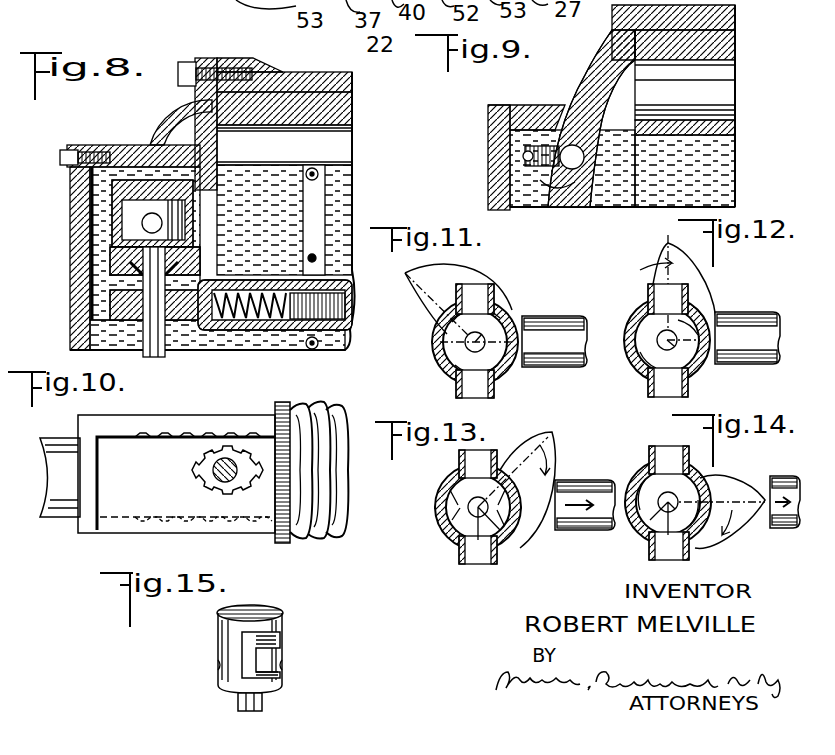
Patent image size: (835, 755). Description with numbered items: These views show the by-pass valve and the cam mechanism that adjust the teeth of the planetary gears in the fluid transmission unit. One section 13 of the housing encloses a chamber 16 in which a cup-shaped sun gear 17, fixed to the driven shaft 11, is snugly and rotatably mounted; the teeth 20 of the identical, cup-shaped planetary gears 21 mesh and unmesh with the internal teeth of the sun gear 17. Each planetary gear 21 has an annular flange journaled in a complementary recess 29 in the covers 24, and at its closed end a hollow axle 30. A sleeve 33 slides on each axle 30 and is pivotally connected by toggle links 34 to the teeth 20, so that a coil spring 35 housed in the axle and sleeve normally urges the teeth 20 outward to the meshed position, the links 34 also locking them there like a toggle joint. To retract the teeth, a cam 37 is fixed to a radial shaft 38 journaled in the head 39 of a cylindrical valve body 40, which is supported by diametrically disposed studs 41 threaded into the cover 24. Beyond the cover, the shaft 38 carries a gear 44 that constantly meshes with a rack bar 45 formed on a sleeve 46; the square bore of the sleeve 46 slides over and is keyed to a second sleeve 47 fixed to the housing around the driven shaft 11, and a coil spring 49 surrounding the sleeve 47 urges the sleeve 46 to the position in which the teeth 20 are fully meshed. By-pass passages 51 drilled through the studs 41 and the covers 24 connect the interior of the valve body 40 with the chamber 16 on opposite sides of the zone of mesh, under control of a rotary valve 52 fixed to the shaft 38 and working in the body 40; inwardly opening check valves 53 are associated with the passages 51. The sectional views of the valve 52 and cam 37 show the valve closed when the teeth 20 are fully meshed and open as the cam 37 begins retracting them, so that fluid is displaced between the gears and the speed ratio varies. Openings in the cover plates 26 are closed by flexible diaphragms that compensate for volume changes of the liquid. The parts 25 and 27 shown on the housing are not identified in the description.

In FIG. 10, the driven shaft 11 is at (62, 520).
In FIG. 8, the housing section 13 is at (353, 83).
In FIG. 8, the chamber 16 is at (273, 100).
In FIG. 8, the sun gear 17 is at (353, 109).
In FIG. 9, the sun gear 17 is at (736, 48).
In FIG. 8, the teeth 20 is at (340, 146).
In FIG. 8, the planetary gears 21 is at (240, 222).
In FIG. 9, the planetary gears 21 is at (736, 129).
In FIG. 8, the covers 24 is at (122, 146).
In FIG. 9, the covers 24 is at (530, 105).
In FIG. 8, the screw 25 is at (176, 65).
In FIG. 8, the cover plates 26 is at (80, 193).
In FIG. 9, the cover plates 26 is at (490, 139).
In FIG. 8, the screw 27 is at (62, 158).
In FIG. 8, the recesses 29 is at (200, 144).
In FIG. 8, the hollow axles 30 is at (349, 319).
In FIG. 8, the sleeve 33 is at (346, 284).
In FIG. 11, the sleeve 33 is at (564, 368).
In FIG. 12, the sleeve 33 is at (759, 365).
In FIG. 13, the sleeve 33 is at (577, 535).
In FIG. 14, the sleeve 33 is at (785, 502).
In FIG. 8, the toggle links 34 is at (318, 196).
In FIG. 8, the coil spring 35 is at (346, 300).
In FIG. 8, the cam 37 is at (120, 306).
In FIG. 9, the cam 37 is at (591, 118).
In FIG. 11, the cam 37 is at (462, 284).
In FIG. 12, the cam 37 is at (692, 277).
In FIG. 13, the cam 37 is at (549, 450).
In FIG. 14, the cam 37 is at (730, 548).
In FIG. 8, the shaft 38 is at (153, 356).
In FIG. 11, the shaft 38 is at (458, 342).
In FIG. 10, the shaft 38 is at (226, 459).
In FIG. 15, the shaft 38 is at (264, 705).
In FIG. 8, the head 39 is at (112, 270).
In FIG. 8, the cylindrical valve body 40 is at (142, 223).
In FIG. 11, the cylindrical valve body 40 is at (447, 373).
In FIG. 12, the cylindrical valve body 40 is at (698, 312).
In FIG. 13, the cylindrical valve body 40 is at (453, 541).
In FIG. 14, the cylindrical valve body 40 is at (703, 481).
In FIG. 9, the studs 41 is at (546, 207).
In FIG. 10, the gear 44 is at (236, 505).
In FIG. 10, the rack bar 45 is at (168, 431).
In FIG. 10, the sleeve 46 is at (119, 524).
In FIG. 10, the second sleeve 47 is at (348, 462).
In FIG. 10, the coil spring 49 is at (311, 524).
In FIG. 8, the by-pass passages 51 is at (115, 232).
In FIG. 9, the by-pass passages 51 is at (582, 172).
In FIG. 11, the by-pass passages 51 is at (483, 300).
In FIG. 12, the by-pass passages 51 is at (668, 340).
In FIG. 13, the by-pass passages 51 is at (481, 565).
In FIG. 14, the by-pass passages 51 is at (668, 450).
In FIG. 8, the rotary valve 52 is at (112, 252).
In FIG. 11, the rotary valve 52 is at (465, 348).
In FIG. 12, the rotary valve 52 is at (694, 358).
In FIG. 13, the rotary valve 52 is at (440, 513).
In FIG. 14, the rotary valve 52 is at (641, 530).
In FIG. 15, the rotary valve 52 is at (283, 654).
In FIG. 9, the check valves 53 is at (523, 158).